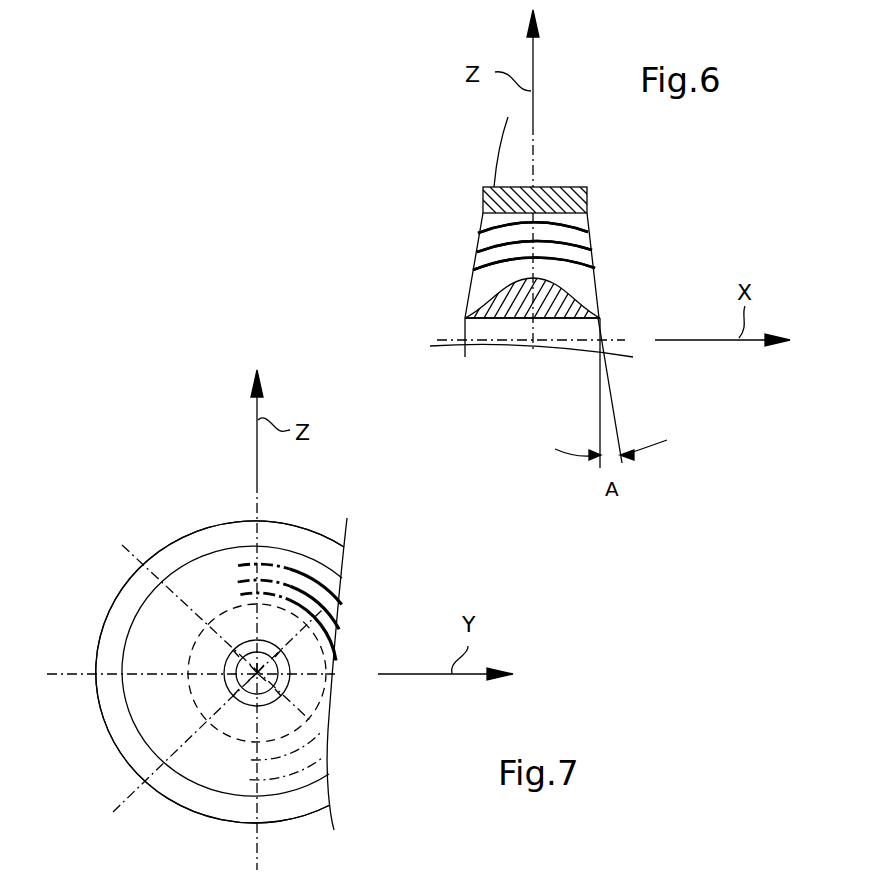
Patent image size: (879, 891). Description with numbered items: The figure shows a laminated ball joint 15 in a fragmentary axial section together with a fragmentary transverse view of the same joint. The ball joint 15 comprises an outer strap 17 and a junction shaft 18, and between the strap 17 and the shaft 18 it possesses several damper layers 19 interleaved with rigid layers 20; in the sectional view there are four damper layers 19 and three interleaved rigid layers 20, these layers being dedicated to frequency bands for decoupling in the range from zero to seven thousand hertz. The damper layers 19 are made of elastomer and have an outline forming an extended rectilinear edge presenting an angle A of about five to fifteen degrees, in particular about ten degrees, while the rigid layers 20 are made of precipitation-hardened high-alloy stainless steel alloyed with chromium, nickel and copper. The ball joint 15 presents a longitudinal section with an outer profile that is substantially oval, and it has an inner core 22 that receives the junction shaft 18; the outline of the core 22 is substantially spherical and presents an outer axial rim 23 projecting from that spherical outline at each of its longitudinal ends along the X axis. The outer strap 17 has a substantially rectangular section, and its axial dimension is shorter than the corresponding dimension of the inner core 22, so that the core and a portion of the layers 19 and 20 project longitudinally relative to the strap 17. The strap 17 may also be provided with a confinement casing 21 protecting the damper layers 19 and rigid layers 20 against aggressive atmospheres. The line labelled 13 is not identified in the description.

In FIG. 6, the blade surface line 13 is at (512, 163).
In FIG. 6, the ball joint 15 is at (442, 196).
In FIG. 7, the ball joint 15 is at (158, 826).
In FIG. 6, the outer strap 17 is at (590, 196).
In FIG. 7, the outer strap 17 is at (208, 543).
In FIG. 6, the junction shaft 18 is at (488, 332).
In FIG. 7, the junction shaft 18 is at (234, 680).
In FIG. 6, the damper layers 19 is at (478, 286).
In FIG. 7, the damper layers 19 is at (322, 712).
In FIG. 6, the rigid layers 20 is at (588, 233).
In FIG. 7, the rigid layers 20 is at (344, 603).
In FIG. 7, the confinement casing 21 is at (222, 778).
In FIG. 6, the inner core 22 is at (480, 308).
In FIG. 7, the inner core 22 is at (202, 660).
In FIG. 6, the outer axial rim 23 is at (598, 318).